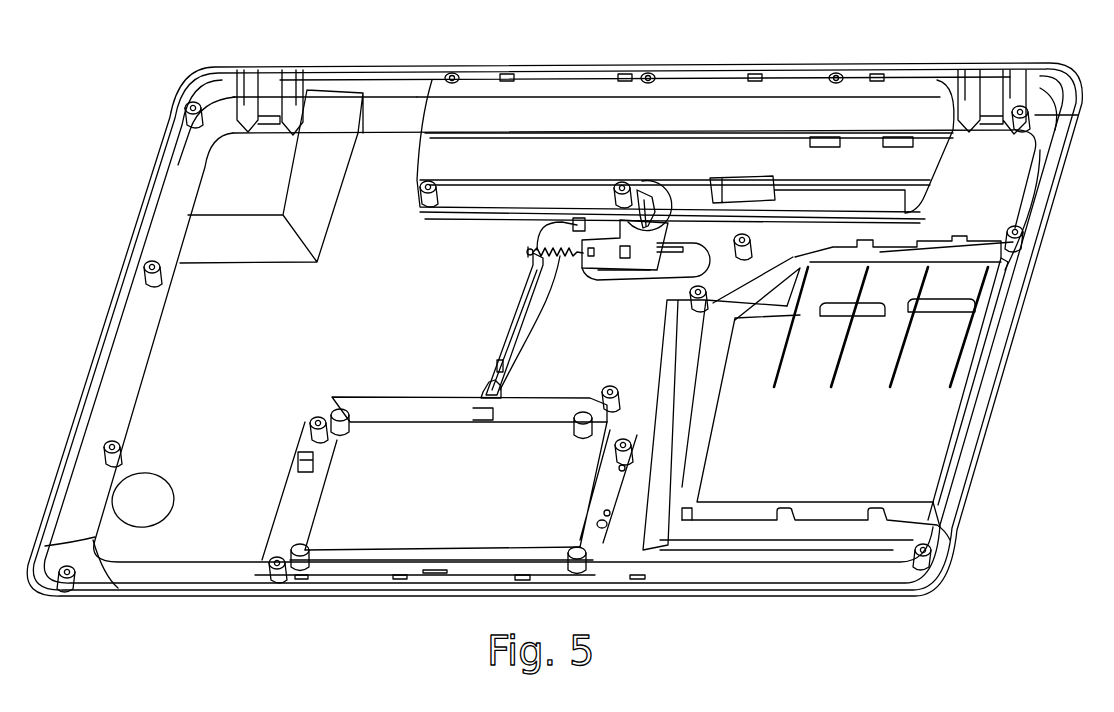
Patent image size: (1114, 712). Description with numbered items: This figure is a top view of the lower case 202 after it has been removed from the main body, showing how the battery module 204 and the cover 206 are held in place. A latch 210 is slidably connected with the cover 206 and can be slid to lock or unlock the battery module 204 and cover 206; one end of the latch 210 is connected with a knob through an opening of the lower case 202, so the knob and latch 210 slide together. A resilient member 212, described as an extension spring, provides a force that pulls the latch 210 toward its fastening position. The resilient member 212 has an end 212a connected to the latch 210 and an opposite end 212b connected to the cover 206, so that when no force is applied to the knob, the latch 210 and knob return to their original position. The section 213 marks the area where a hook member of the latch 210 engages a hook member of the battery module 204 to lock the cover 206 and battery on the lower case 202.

The lower case 202 is at (932, 428).
The battery module 204 is at (687, 112).
The cover 206 is at (373, 507).
The latch 210 is at (693, 258).
The resilient member 212 is at (557, 255).
The end of resilient member 212a is at (500, 390).
The opposite end of resilient member 212b is at (533, 251).
The section 213 is at (636, 185).